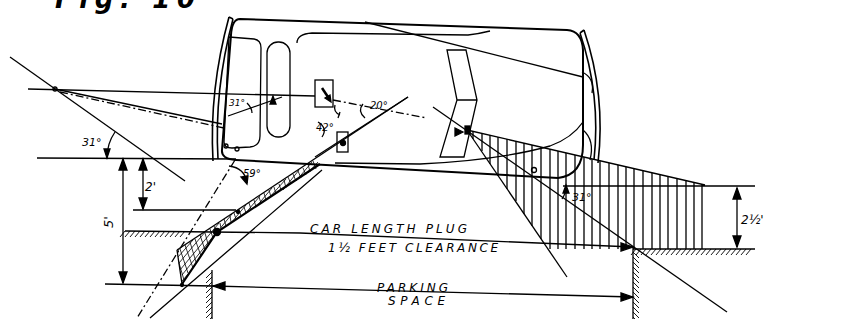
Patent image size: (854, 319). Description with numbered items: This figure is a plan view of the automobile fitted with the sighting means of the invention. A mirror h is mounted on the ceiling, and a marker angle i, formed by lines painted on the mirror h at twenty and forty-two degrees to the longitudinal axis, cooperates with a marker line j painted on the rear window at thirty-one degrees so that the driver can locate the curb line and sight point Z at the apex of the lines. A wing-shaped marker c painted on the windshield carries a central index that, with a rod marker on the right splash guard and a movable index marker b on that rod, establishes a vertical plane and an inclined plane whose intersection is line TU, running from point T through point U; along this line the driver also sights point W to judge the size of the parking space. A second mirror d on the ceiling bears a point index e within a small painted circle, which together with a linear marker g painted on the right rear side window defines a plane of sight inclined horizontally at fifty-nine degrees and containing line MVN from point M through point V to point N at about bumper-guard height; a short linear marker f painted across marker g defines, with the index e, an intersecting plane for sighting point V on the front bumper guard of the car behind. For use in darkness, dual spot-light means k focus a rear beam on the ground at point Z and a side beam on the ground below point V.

The sighting point Z is at (46, 99).
The point T of sight line TU T is at (472, 127).
The mirror h is at (333, 83).
The marker angle i is at (322, 82).
The second mirror d is at (349, 151).
The point index e is at (346, 143).
The short linear marker f is at (315, 157).
The linear marker g is at (313, 157).
The marker line j is at (273, 100).
The dual spot-light means k is at (241, 143).
The wing-shaped marker c is at (456, 132).
The index marker b is at (535, 173).
The point V is at (220, 240).
The point M of line MVN M is at (236, 210).
The point N of line MVN N is at (182, 290).
The point W is at (632, 250).
The point U of sight line TU U is at (611, 218).